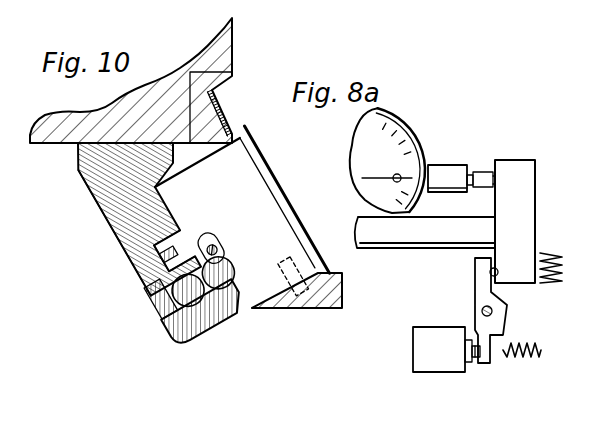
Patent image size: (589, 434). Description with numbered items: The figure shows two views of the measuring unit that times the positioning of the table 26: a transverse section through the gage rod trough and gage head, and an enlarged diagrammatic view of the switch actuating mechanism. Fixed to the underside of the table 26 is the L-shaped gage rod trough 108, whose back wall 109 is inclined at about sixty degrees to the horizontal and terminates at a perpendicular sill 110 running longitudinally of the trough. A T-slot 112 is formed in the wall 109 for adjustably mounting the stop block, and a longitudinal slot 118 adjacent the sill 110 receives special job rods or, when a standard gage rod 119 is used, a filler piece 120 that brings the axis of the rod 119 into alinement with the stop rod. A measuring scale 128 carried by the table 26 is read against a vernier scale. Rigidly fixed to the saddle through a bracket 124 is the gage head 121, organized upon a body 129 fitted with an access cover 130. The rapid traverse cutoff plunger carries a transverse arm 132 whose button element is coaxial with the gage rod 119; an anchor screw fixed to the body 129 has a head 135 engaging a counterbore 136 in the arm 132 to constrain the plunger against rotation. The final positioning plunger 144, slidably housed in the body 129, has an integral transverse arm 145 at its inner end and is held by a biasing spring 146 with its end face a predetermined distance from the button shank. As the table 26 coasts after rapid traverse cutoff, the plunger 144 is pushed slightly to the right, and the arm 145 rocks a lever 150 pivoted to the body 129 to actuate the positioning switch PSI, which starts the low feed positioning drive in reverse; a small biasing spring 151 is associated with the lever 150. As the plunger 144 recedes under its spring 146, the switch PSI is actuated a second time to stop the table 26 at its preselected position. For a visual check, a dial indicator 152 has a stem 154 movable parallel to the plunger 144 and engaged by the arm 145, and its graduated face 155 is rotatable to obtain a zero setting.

In FIG. 10, the table 26 is at (230, 51).
In FIG. 10, the measuring scale 128 is at (233, 104).
In FIG. 10, the body 129 is at (206, 171).
In FIG. 10, the gage head 121 is at (274, 180).
In FIG. 10, the access cover 130 is at (289, 211).
In FIG. 10, the gage rod trough 108 is at (112, 230).
In FIG. 10, the back wall 109 is at (117, 207).
In FIG. 10, the T-slot 112 is at (143, 276).
In FIG. 10, the sill 110 is at (221, 320).
In FIG. 10, the longitudinal slot 118 is at (178, 305).
In FIG. 10, the filler piece 120 is at (183, 292).
In FIG. 10, the gage rod 119 is at (233, 264).
In FIG. 10, the transverse arm 132 is at (211, 231).
In FIG. 10, the counterbore 136 is at (218, 241).
In FIG. 10, the head 135 is at (224, 249).
In FIG. 10, the bracket 124 is at (290, 308).
In FIG. 8a, the dial indicator 152 is at (416, 138).
In FIG. 8a, the graduated face 155 is at (408, 157).
In FIG. 8a, the stem 154 is at (482, 173).
In FIG. 8a, the transverse arm 145 is at (531, 194).
In FIG. 8a, the biasing spring 146 is at (563, 248).
In FIG. 8a, the final positioning plunger 144 is at (450, 248).
In FIG. 8a, the rockable lever 150 is at (500, 330).
In FIG. 8a, the biasing spring 151 is at (527, 361).
In FIG. 8a, the positioning switch PSI is at (447, 335).